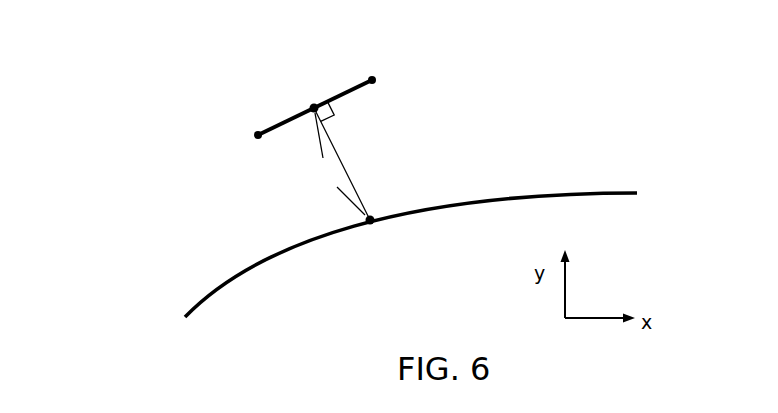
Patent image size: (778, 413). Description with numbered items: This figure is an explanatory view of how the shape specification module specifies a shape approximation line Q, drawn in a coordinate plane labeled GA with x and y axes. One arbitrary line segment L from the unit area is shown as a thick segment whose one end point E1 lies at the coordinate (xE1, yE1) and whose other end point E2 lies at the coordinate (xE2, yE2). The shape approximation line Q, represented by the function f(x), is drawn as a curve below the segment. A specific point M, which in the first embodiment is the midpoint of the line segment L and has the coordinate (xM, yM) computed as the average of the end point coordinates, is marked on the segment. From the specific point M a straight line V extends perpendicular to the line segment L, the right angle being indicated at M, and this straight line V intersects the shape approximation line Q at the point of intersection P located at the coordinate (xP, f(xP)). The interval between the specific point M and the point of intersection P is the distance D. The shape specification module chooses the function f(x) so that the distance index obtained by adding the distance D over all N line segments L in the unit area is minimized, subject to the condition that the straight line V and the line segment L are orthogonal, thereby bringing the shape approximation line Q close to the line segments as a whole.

The graph / image coordinate system GA is at (63, 48).
The shape approximation line Q is at (411, 239).
The line segment L is at (343, 93).
The end point E1 is at (188, 138).
The end point E2 is at (440, 83).
The specific point M is at (269, 97).
The straight line V is at (335, 149).
The distance D is at (339, 164).
The point of intersection P is at (432, 236).